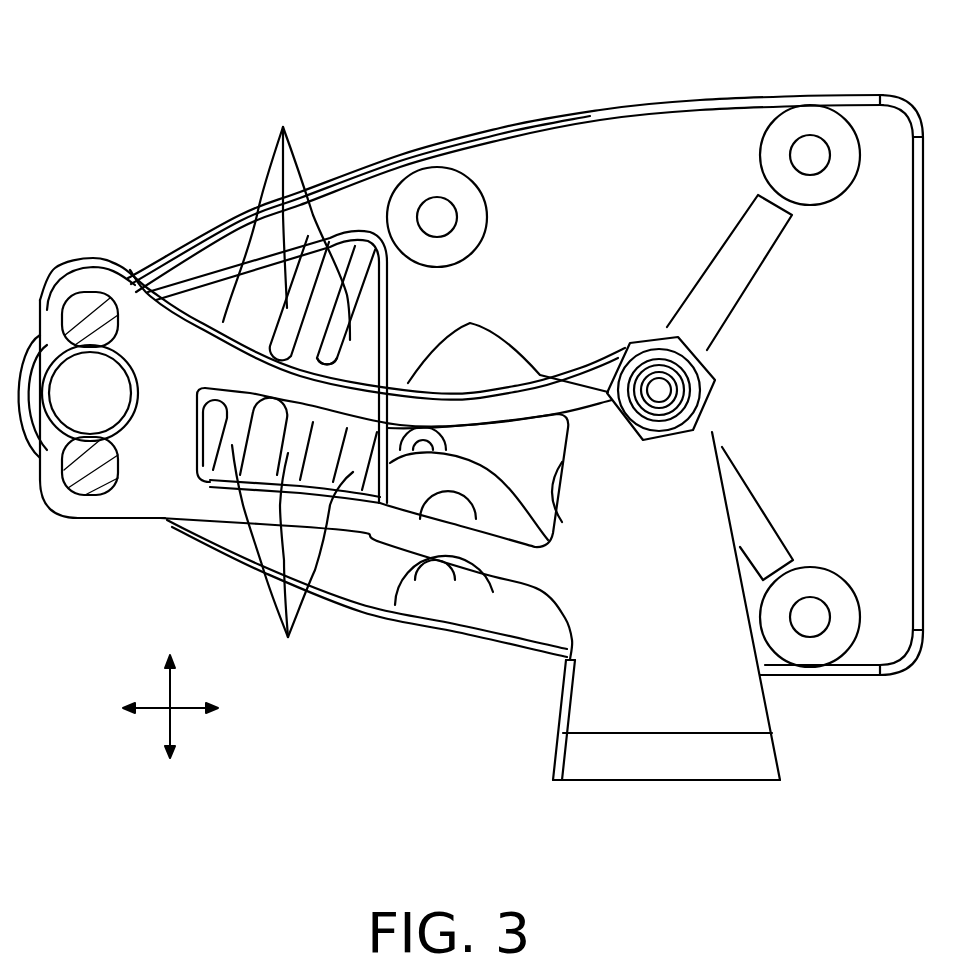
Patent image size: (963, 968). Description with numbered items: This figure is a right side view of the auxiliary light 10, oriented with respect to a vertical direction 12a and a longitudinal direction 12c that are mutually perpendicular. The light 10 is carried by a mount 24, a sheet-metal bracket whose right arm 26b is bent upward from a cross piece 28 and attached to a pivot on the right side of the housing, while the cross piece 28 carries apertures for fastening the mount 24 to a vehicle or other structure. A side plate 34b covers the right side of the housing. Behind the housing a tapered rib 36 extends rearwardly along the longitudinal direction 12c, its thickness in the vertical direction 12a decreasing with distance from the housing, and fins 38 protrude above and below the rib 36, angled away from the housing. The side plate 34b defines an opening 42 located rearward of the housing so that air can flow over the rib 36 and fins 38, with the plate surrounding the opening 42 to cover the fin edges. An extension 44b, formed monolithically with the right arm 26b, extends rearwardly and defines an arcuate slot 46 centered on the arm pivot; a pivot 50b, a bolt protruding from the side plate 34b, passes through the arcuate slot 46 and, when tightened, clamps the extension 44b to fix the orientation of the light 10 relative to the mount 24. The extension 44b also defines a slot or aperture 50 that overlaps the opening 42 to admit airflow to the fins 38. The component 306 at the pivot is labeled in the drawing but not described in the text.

The auxiliary light 10 is at (114, 122).
The vertical direction 12a is at (173, 722).
The longitudinal direction 12c is at (190, 703).
The mount 24 is at (549, 715).
The right arm 26b is at (660, 645).
The cross piece 28 is at (765, 777).
The side plate 34b is at (730, 145).
The rib 36 is at (333, 353).
The fins 38 is at (288, 382).
The opening 42 is at (378, 245).
The extension 44b is at (396, 530).
The arcuate slot 46 is at (92, 295).
The slot or aperture 50 is at (493, 438).
The pivot 50b is at (88, 415).
The fastener nut 306 is at (652, 376).